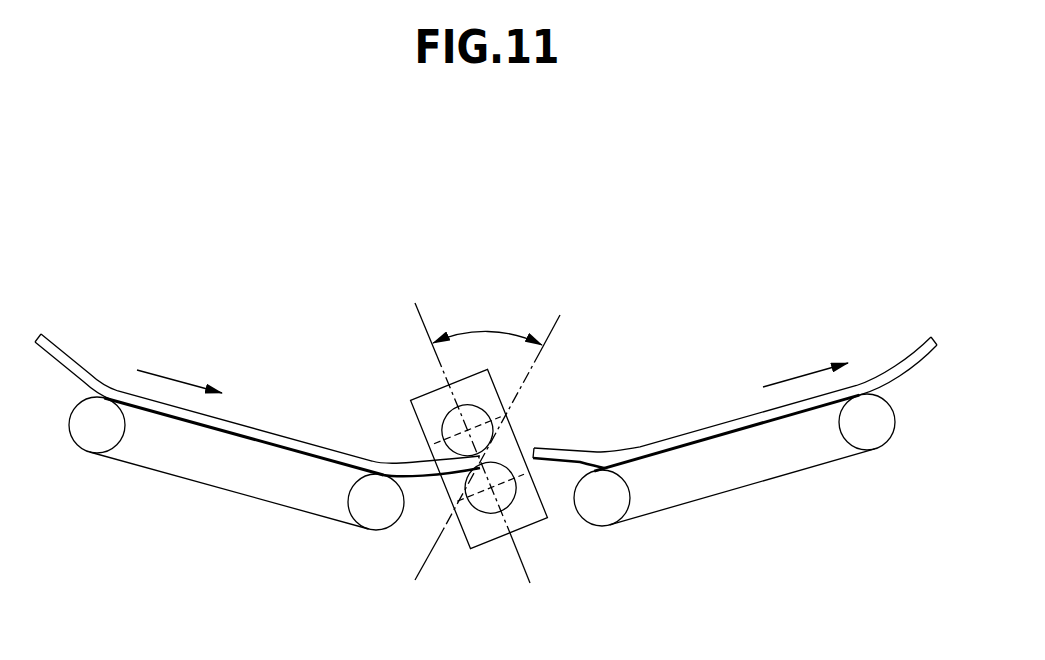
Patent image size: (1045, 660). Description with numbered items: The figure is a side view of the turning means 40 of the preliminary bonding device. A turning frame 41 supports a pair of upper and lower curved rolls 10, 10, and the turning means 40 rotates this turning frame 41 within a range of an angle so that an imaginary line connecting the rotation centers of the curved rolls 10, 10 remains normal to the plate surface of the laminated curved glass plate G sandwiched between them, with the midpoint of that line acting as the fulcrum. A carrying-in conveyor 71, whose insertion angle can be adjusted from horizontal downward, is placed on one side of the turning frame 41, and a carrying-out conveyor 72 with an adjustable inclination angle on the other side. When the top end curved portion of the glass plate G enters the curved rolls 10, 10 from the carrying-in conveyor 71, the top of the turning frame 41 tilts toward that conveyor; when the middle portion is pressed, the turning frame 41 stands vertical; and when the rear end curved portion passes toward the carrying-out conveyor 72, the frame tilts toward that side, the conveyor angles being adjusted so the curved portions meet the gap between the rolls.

The turning means 40 is at (482, 413).
The turning frame 41 is at (528, 512).
The curved roll 10 is at (455, 422).
The carrying-in conveyor 71 is at (225, 463).
The carrying-out conveyor 72 is at (735, 463).
The laminated curved glass plate G is at (60, 355).